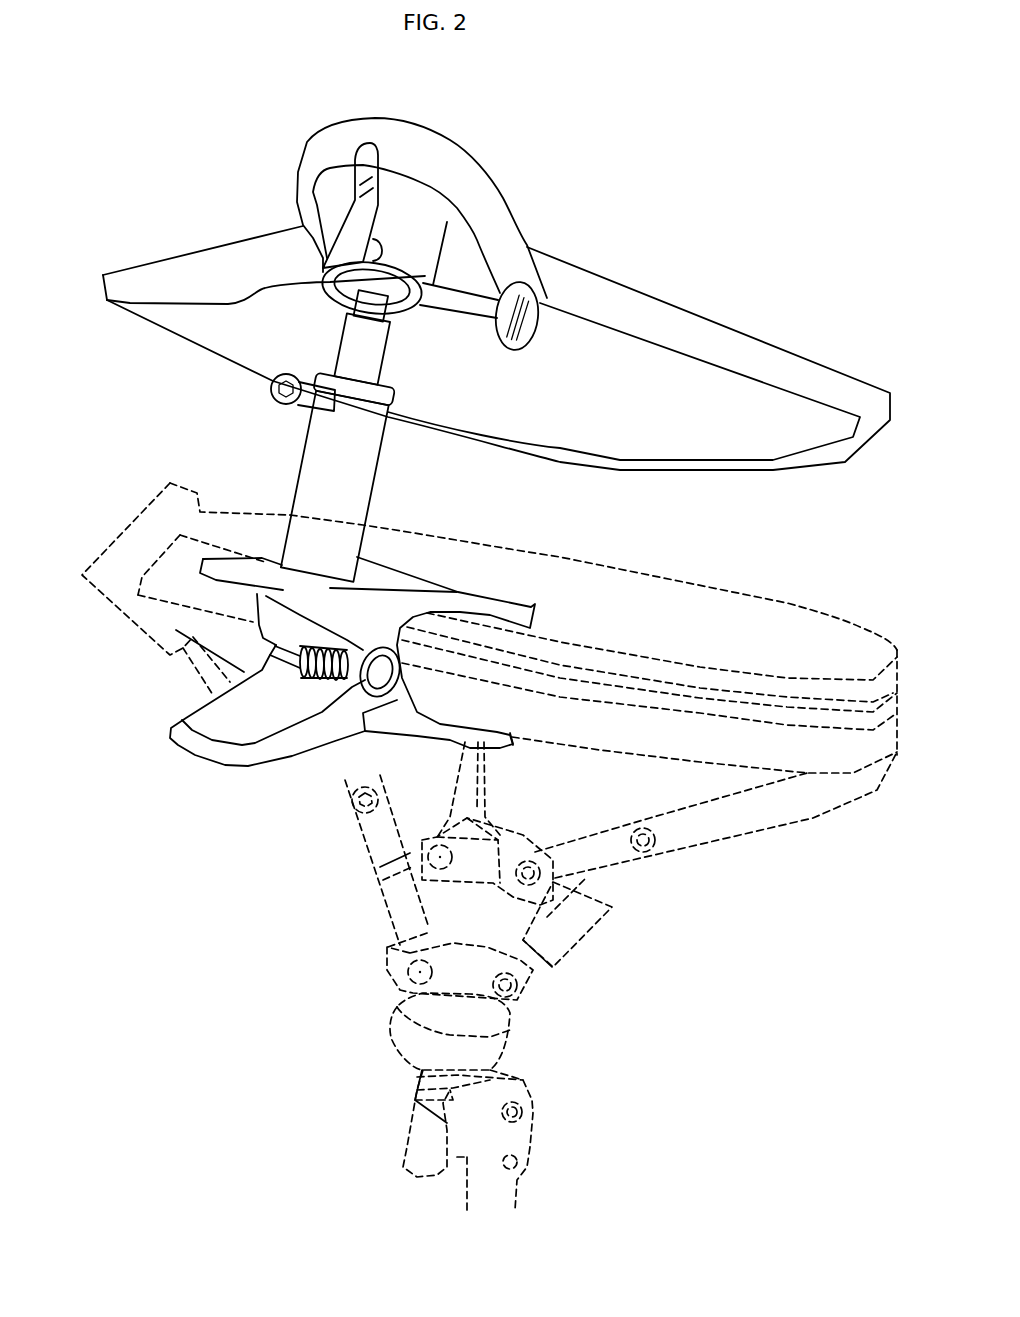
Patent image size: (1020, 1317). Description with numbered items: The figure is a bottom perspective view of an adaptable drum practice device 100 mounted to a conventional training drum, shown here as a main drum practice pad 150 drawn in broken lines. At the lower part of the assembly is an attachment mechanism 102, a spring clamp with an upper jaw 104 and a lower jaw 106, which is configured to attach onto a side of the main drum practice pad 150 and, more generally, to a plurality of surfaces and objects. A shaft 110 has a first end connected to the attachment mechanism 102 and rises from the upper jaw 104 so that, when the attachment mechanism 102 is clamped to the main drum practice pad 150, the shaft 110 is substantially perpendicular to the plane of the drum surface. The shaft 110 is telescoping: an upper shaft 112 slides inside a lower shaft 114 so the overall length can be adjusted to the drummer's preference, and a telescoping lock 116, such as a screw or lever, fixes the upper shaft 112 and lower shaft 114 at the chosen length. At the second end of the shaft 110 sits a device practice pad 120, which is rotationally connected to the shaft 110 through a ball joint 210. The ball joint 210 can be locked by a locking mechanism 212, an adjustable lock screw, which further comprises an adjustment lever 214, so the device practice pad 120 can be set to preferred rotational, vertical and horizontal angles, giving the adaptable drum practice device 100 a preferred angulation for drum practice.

The adaptable drum practice device 100 is at (145, 171).
The attachment mechanism 102 is at (189, 757).
The upper jaw 104 is at (540, 616).
The lower jaw 106 is at (517, 752).
The shaft 110 is at (261, 441).
The upper shaft 112 is at (393, 353).
The lower shaft 114 is at (377, 490).
The telescoping lock 116 is at (267, 388).
The device practice pad 120 is at (720, 318).
The main drum practice pad 150 is at (783, 593).
The ball joint 210 is at (165, 325).
The locking mechanism 212 is at (537, 278).
The adjustment lever 214 is at (352, 162).